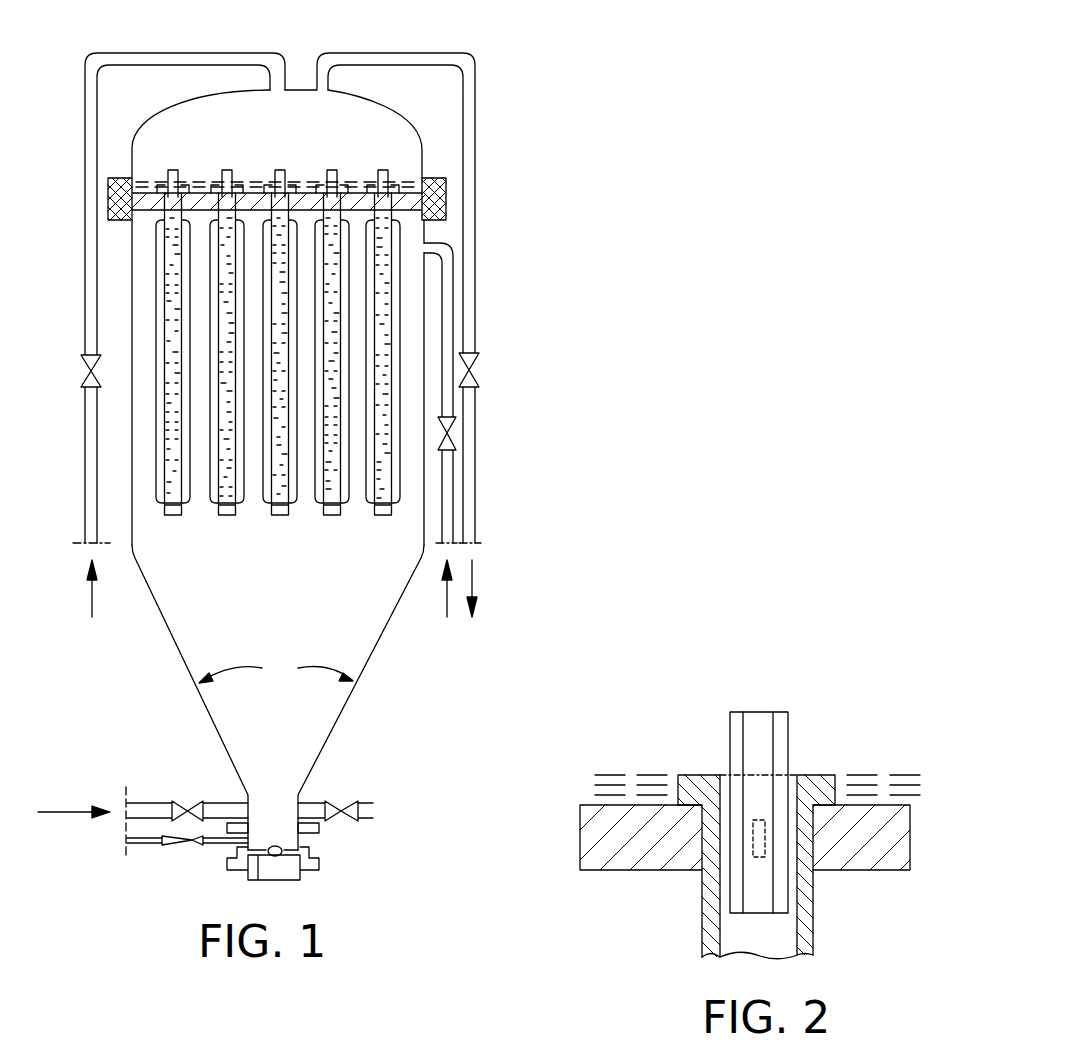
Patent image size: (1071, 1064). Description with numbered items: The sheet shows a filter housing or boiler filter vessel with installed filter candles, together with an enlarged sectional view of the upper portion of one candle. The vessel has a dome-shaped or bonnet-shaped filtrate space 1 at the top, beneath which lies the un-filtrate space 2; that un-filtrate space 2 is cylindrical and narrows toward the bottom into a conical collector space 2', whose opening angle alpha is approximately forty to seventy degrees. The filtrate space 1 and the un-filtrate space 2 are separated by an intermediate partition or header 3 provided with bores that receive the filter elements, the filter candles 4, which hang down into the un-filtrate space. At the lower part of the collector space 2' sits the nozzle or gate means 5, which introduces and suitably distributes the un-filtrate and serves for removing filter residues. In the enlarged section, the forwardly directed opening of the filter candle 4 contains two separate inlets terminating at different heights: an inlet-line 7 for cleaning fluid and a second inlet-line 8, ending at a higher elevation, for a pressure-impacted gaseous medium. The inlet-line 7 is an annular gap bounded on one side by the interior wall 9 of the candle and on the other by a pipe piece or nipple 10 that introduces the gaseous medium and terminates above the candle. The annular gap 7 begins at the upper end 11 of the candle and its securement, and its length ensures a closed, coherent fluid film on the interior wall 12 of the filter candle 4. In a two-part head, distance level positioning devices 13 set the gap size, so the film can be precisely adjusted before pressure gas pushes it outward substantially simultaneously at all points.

In FIG. 1, the filtrate space 1 is at (418, 134).
In FIG. 1, the un-filtrate space 2 is at (346, 382).
In FIG. 1, the collector space 2' is at (301, 697).
In FIG. 1, the intermediate partition 3 is at (438, 203).
In FIG. 2, the intermediate partition 3 is at (870, 858).
In FIG. 1, the filter candle 4 is at (400, 277).
In FIG. 2, the filter candle 4 is at (700, 840).
In FIG. 1, the gate means 5 is at (310, 838).
In FIG. 2, the inlet-line for cleaning fluid 7 is at (790, 772).
In FIG. 2, the second inlet-line 8 is at (758, 712).
In FIG. 2, the interior wall 9 is at (708, 792).
In FIG. 2, the pipe piece 10 is at (782, 728).
In FIG. 2, the upper end 11 is at (815, 773).
In FIG. 2, the interior wall of the filter candle 12 is at (715, 955).
In FIG. 2, the distance level positioning devices 13 is at (760, 860).